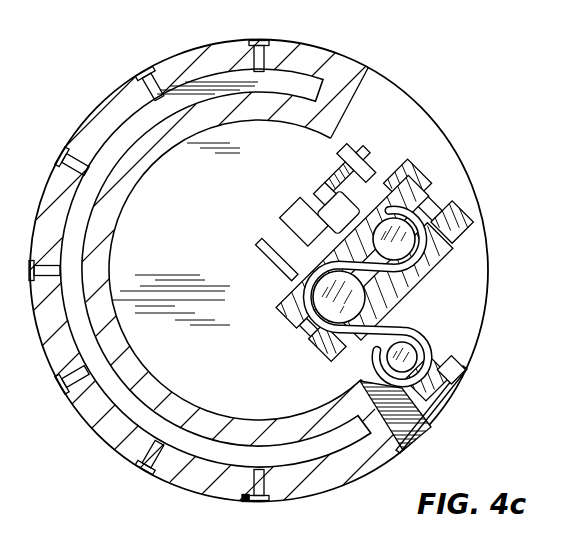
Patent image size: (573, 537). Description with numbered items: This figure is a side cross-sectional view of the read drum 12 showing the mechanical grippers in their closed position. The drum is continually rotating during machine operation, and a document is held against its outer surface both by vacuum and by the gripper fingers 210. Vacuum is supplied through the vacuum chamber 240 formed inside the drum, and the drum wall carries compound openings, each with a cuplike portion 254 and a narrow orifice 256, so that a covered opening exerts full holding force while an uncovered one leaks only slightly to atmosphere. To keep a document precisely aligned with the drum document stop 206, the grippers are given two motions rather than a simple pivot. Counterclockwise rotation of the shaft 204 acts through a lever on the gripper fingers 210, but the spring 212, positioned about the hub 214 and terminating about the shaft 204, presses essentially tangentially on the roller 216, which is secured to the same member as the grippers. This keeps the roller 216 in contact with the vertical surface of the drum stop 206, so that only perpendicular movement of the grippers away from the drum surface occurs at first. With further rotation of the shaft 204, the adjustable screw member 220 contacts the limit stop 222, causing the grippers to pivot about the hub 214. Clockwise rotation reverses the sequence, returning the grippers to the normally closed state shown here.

The read drum 12 is at (284, 40).
The shaft 204 is at (413, 243).
The drum document stop 206 is at (423, 433).
The gripper fingers 210 is at (450, 404).
The spring 212 is at (423, 258).
The hub 214 is at (357, 303).
The roller 216 is at (428, 334).
The adjustable screw member 220 is at (349, 169).
The limit stop 222 is at (325, 193).
The vacuum chamber 240 is at (278, 470).
The cuplike portion 254 is at (268, 505).
The narrow orifice 256 is at (157, 448).